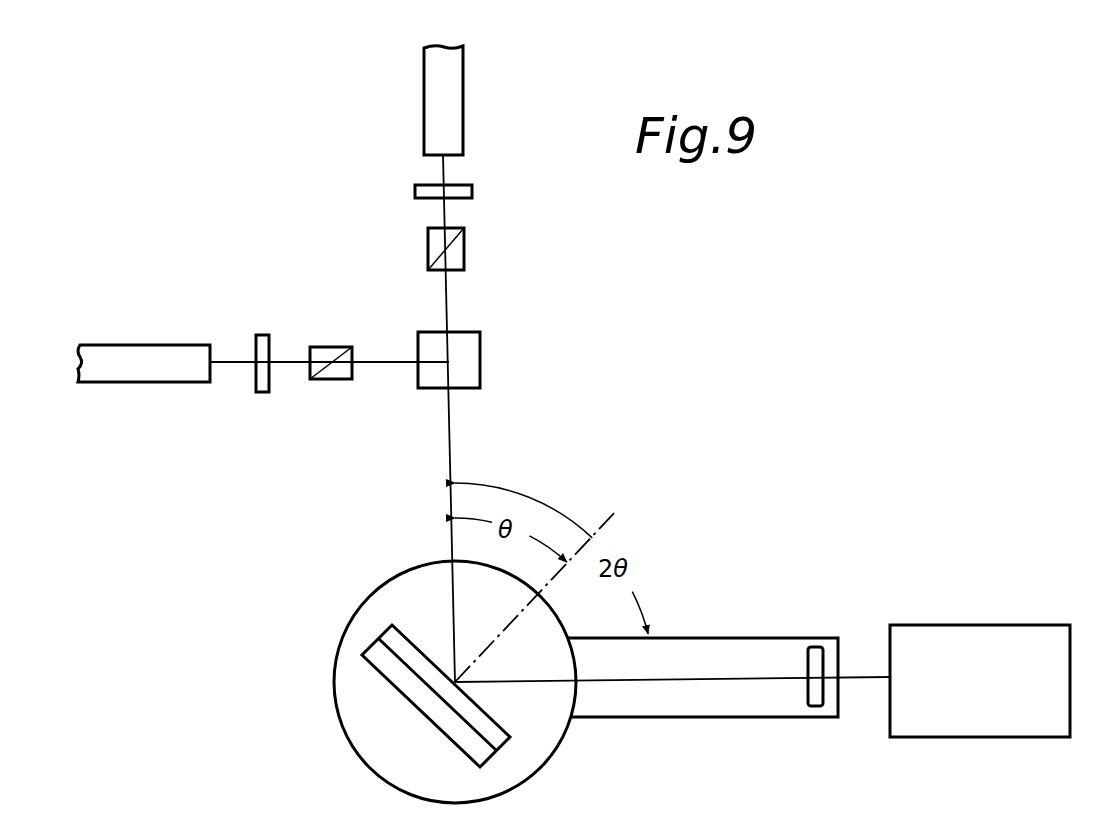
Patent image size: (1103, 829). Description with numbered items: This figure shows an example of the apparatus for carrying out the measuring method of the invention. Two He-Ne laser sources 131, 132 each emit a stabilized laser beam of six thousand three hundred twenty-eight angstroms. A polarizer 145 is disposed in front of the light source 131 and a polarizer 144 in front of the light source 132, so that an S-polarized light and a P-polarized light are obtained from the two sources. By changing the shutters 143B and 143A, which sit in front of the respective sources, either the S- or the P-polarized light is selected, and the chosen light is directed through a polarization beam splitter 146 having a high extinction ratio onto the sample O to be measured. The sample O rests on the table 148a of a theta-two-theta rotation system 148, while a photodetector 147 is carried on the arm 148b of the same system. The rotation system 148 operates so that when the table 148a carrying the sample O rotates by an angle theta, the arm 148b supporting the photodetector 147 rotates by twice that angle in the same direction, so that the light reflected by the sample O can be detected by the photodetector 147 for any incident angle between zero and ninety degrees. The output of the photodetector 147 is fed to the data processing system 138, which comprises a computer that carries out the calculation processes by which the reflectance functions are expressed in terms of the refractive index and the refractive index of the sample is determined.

The He-Ne laser source 131 is at (460, 101).
The shutter 143B is at (472, 190).
The polarizer 145 is at (464, 256).
The He-Ne laser source 132 is at (186, 347).
The shutter 143A is at (258, 333).
The polarizer 144 is at (332, 347).
The polarization beam splitter 146 is at (480, 367).
The table 148a is at (528, 765).
The arm 148b is at (730, 707).
The θ-2θ rotation system 148 is at (617, 747).
The photodetector 147 is at (817, 648).
The data processing system 138 is at (968, 625).
The sample O is at (458, 753).